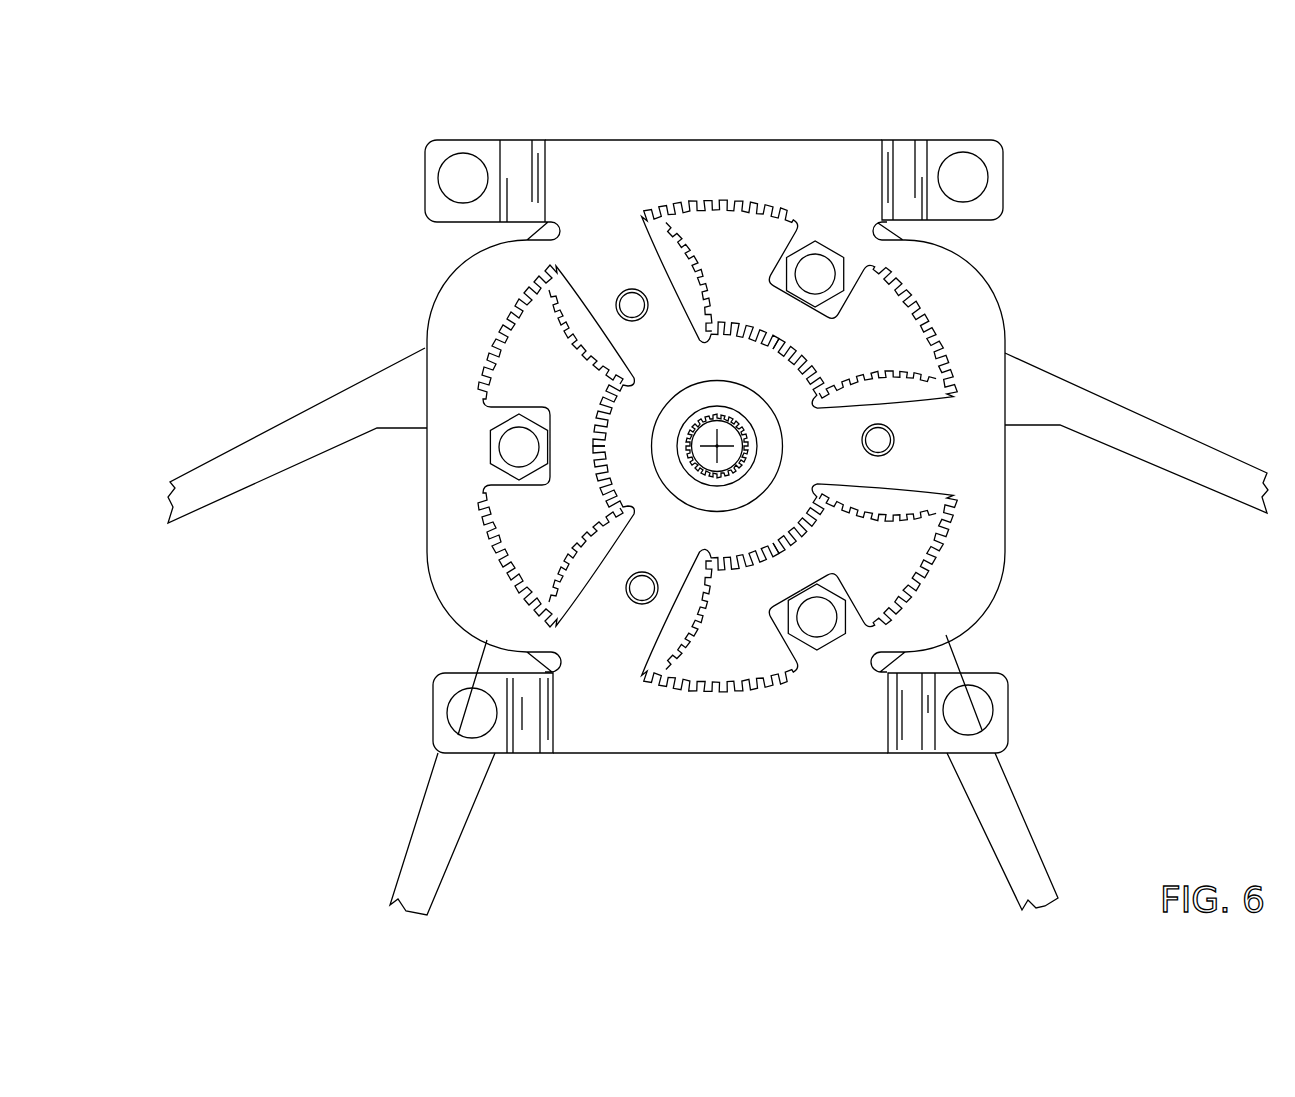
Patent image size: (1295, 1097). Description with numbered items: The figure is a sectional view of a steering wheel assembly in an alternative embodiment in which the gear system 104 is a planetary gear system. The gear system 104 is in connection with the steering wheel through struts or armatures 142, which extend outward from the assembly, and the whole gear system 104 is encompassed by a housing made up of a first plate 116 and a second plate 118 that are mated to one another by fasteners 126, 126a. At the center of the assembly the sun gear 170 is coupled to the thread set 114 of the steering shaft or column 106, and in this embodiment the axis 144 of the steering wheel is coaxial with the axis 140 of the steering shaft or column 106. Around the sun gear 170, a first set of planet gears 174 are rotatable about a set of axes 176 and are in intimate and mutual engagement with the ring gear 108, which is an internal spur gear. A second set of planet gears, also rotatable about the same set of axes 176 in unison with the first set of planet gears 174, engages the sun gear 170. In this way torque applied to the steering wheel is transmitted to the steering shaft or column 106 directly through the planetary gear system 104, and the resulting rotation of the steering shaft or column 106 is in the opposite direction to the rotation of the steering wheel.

The gear system 104 is at (619, 498).
The steering shaft or column 106 is at (529, 484).
The ring gear 108 is at (905, 230).
The thread set 114 is at (710, 458).
The first plate 116 is at (437, 151).
The second plate 118 is at (463, 178).
The fastener 126 is at (401, 412).
The fastener 126a is at (512, 442).
The axis of the steering shaft or column 140 is at (554, 393).
The struts or armatures 142 is at (1117, 417).
The axis of the steering wheel 144 is at (712, 445).
The sun gear 170 is at (740, 322).
The first set of planet gears 174 is at (887, 360).
The set of axes 176 is at (880, 442).